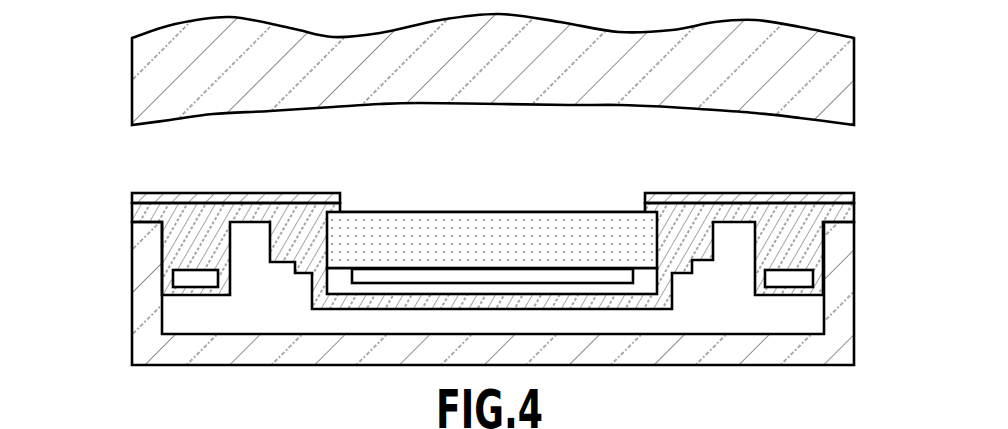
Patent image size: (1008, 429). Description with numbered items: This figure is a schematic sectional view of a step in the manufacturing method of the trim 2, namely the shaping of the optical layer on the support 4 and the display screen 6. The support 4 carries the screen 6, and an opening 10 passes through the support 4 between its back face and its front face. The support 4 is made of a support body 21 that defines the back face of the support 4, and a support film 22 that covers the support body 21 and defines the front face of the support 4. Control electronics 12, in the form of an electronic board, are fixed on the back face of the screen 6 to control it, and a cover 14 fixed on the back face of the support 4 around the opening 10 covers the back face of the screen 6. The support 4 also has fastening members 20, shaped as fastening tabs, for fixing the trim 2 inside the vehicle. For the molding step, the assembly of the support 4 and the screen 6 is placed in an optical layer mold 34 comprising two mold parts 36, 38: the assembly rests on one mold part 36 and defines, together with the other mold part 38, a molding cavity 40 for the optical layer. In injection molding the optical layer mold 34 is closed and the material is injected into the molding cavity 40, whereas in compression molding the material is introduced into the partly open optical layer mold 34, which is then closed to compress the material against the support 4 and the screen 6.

The trim 2 is at (52, 426).
The support 4 is at (62, 197).
The display screen 6 is at (421, 238).
The opening 10 is at (644, 208).
The control electronics 12 is at (477, 280).
The cover 14 is at (388, 303).
The fastening members 20 is at (812, 243).
The support body 21 is at (137, 212).
The support film 22 is at (132, 199).
The optical layer mold 34 is at (70, 249).
The mold part 36 is at (132, 320).
The mold part 38 is at (132, 115).
The molding cavity 40 is at (714, 163).